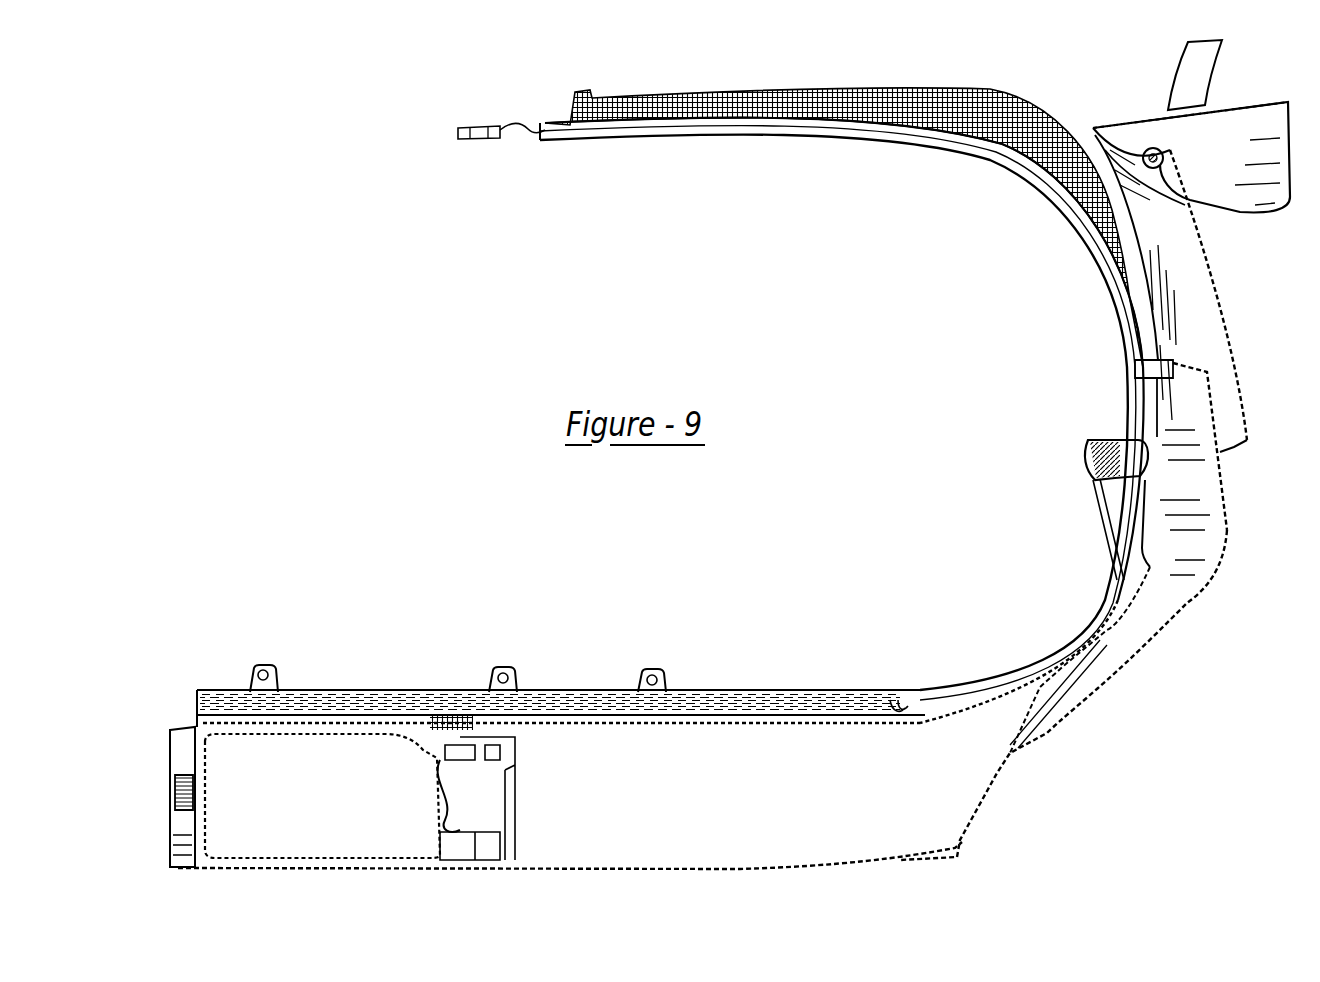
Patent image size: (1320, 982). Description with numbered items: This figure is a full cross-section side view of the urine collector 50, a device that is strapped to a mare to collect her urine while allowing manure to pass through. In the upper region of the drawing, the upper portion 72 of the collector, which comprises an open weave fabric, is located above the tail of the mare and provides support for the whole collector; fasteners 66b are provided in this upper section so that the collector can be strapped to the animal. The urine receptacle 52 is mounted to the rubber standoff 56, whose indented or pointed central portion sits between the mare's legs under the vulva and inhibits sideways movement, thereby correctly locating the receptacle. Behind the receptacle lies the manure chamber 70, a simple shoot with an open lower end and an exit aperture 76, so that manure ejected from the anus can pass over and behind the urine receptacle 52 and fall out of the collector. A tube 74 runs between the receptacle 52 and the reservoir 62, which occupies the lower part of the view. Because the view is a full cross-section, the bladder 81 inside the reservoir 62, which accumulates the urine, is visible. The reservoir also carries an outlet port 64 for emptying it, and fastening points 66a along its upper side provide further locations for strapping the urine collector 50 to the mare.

The urine collector 50 is at (1077, 340).
The urine receptacle 52 is at (1187, 523).
The rubber standoff 56 is at (1092, 440).
The reservoir 62 is at (770, 820).
The outlet port 64 is at (188, 773).
The fastening points 66a is at (277, 672).
The fasteners 66b is at (478, 137).
The manure chamber 70 is at (1205, 305).
The upper portion 72 is at (825, 135).
The tube 74 is at (1140, 648).
The exit aperture 76 is at (1235, 448).
The bladder 81 is at (353, 813).